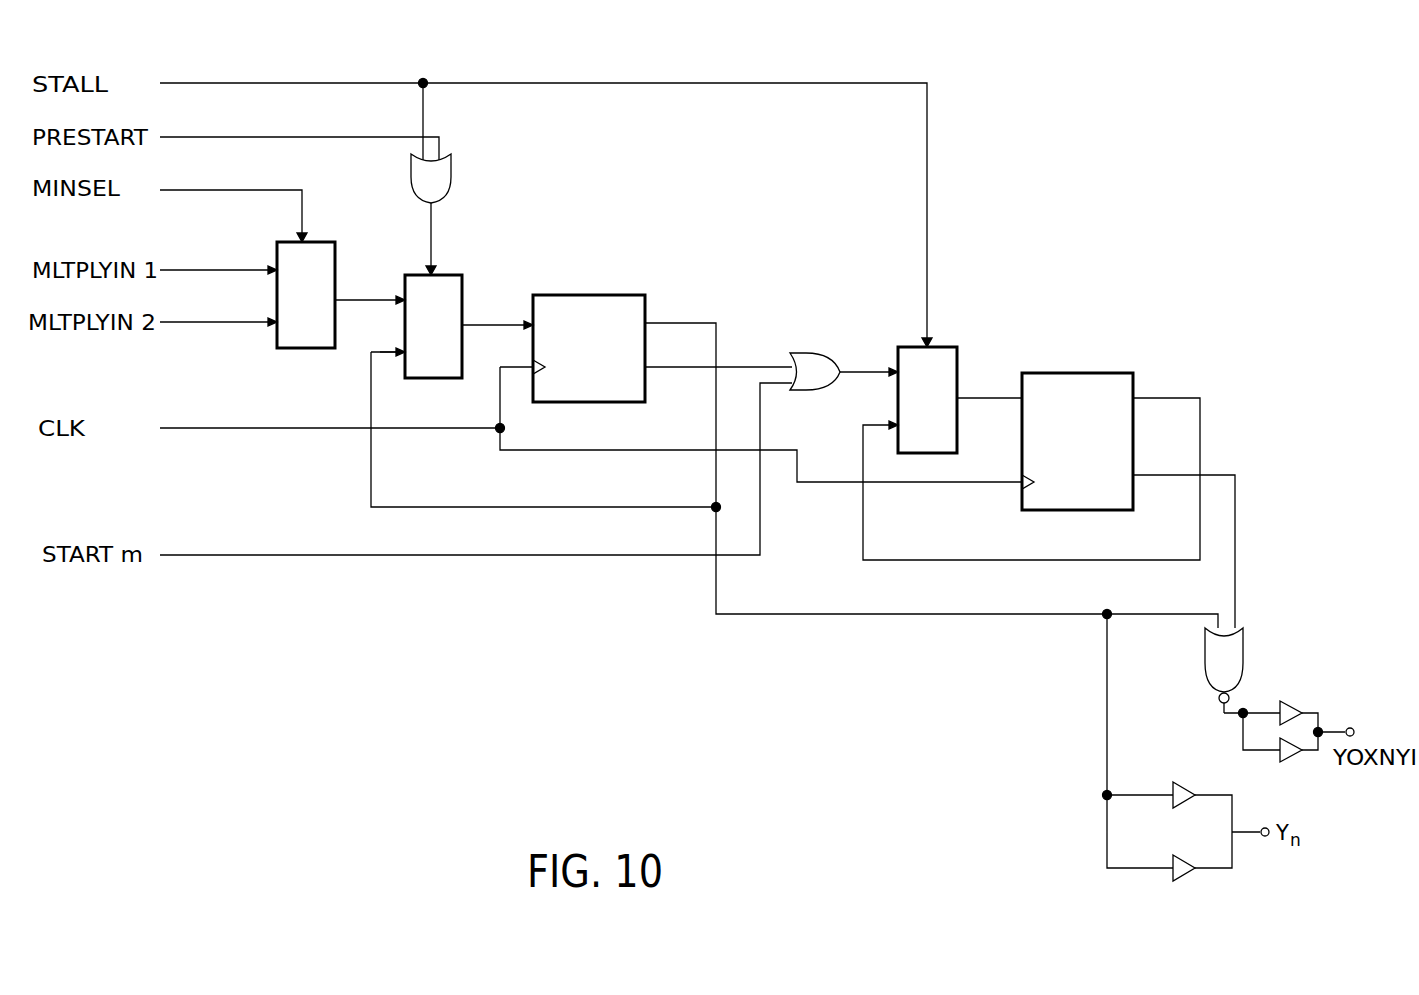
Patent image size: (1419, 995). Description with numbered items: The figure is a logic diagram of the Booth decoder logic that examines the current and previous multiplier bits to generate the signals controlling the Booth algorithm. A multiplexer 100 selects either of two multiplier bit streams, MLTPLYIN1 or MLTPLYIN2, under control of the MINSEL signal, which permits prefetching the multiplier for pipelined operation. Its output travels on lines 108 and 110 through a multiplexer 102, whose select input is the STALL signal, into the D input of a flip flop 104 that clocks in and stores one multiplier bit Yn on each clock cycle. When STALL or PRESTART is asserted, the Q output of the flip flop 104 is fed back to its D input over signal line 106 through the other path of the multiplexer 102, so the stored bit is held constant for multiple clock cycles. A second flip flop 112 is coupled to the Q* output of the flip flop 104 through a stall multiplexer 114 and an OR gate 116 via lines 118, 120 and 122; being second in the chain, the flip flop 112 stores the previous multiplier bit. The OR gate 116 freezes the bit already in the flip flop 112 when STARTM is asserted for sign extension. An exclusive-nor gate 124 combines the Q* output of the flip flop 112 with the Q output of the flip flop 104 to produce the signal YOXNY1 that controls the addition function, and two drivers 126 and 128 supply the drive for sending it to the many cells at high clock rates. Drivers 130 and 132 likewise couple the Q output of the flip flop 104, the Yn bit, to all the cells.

The multiplexer 100 is at (297, 348).
The multiplexer 102 is at (415, 378).
The flip flop 104 is at (600, 295).
The signal line 106 is at (558, 507).
The line 108 is at (352, 300).
The line 110 is at (481, 325).
The second flip flop 112 is at (1072, 373).
The stall multiplexer 114 is at (942, 347).
The OR gate 116 is at (806, 353).
The line 118 is at (735, 367).
The line 120 is at (866, 376).
The line 122 is at (982, 398).
The exclusive-nor gate 124 is at (1243, 662).
The driver 126 is at (1290, 700).
The driver 128 is at (1288, 762).
The driver 130 is at (1185, 783).
The driver 132 is at (1185, 877).